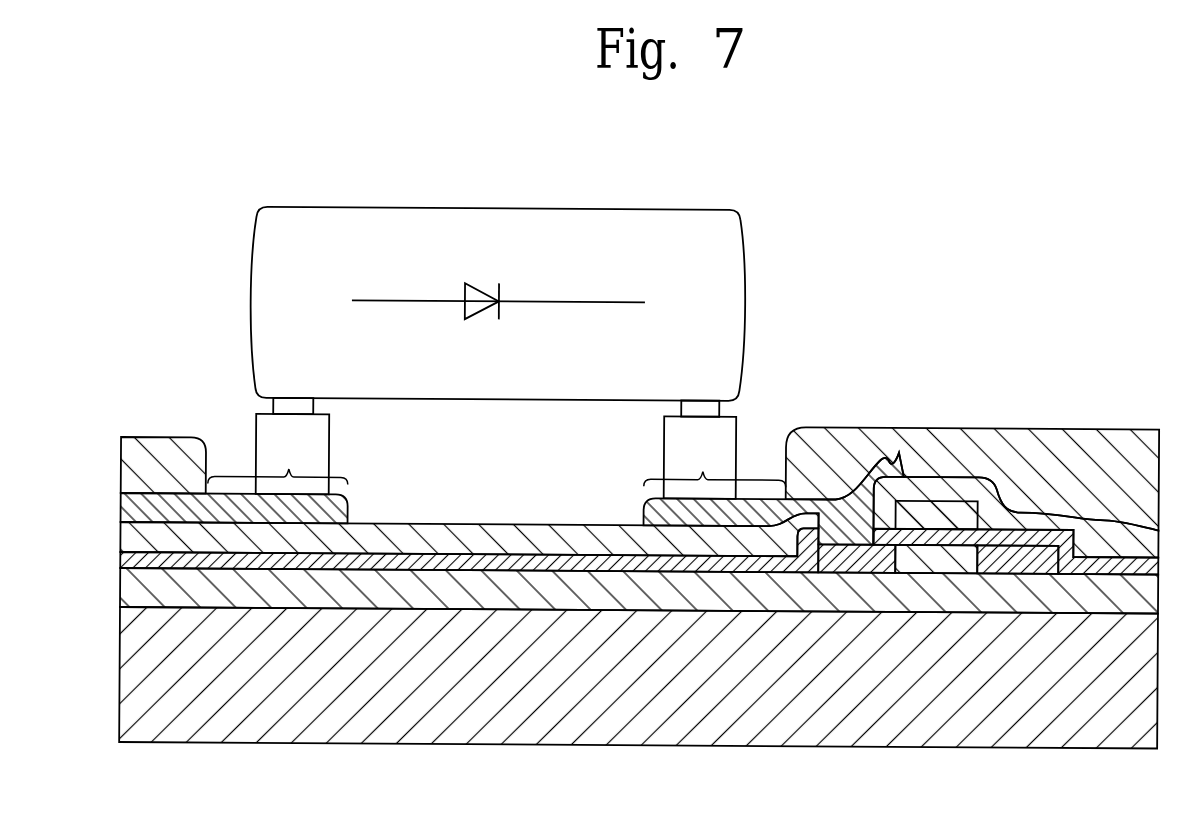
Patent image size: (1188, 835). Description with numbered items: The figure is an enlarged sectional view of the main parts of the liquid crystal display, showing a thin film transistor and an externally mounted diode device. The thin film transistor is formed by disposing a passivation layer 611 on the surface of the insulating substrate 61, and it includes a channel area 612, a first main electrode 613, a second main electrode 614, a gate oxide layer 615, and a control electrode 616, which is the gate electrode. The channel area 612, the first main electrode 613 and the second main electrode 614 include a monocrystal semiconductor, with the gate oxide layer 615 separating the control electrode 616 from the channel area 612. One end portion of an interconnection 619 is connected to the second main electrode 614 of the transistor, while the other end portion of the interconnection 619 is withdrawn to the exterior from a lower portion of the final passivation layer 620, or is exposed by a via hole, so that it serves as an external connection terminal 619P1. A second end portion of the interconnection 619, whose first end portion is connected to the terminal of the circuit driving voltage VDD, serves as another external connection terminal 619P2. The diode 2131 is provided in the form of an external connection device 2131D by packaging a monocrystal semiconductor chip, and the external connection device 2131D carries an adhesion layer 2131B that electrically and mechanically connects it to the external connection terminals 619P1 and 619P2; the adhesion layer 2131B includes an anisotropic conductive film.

The insulating substrate 61 is at (135, 670).
The passivation layer 611 is at (135, 587).
The channel area 612 is at (940, 557).
The first main electrode 613 is at (1023, 557).
The second main electrode 614 is at (853, 557).
The gate oxide layer 615 is at (1040, 530).
The control electrode 616 is at (955, 498).
The interconnection 619 is at (133, 505).
The external connection terminal 619P1 is at (715, 467).
The external connection terminal 619P2 is at (278, 464).
The final passivation layer 620 is at (152, 445).
The diode 2131 is at (482, 286).
The adhesion layer 2131B is at (317, 425).
The external connection device 2131D is at (498, 266).